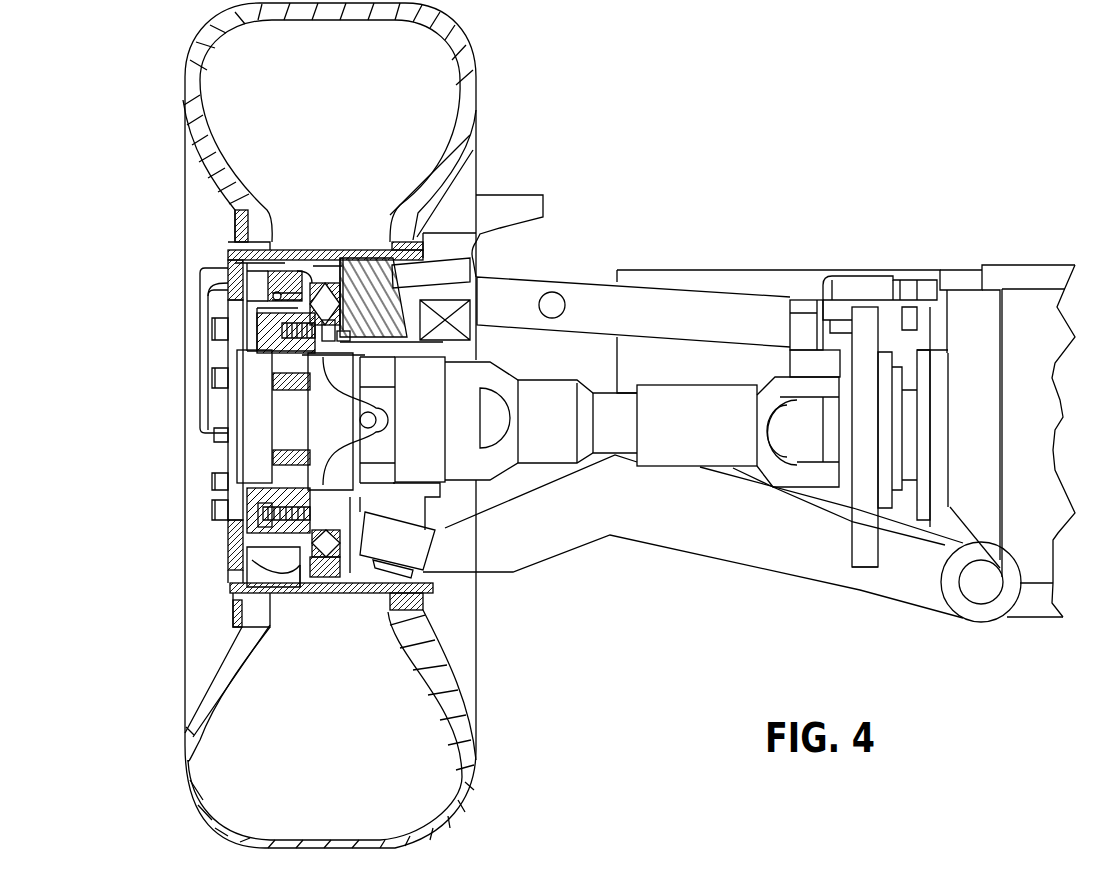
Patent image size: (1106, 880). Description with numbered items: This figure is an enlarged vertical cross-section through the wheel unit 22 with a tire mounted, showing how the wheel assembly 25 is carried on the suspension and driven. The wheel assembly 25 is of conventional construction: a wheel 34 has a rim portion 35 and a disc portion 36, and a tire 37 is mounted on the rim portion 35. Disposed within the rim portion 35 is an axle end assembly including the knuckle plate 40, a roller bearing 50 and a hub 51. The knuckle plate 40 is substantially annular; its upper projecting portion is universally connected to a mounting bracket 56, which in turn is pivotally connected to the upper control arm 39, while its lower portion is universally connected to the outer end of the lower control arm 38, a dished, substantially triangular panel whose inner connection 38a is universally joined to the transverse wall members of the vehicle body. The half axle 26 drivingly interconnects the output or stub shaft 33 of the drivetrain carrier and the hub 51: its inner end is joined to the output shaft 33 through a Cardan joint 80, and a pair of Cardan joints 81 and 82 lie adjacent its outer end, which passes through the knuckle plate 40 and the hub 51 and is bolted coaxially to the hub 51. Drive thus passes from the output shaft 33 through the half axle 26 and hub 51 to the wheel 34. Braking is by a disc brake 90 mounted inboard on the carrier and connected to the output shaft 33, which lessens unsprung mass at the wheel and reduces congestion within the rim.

The wheel unit 22 is at (740, 192).
The wheel assembly 25 is at (218, 570).
The half axle 26 is at (700, 447).
The output shaft 33 is at (895, 428).
The wheel 34 is at (220, 273).
The rim portion 35 is at (333, 250).
The disc portion 36 is at (218, 290).
The tire 37 is at (476, 62).
The lower control arm 38 is at (748, 568).
The pivot bushing 38a is at (972, 590).
The upper control arm 39 is at (557, 278).
The knuckle plate 40 is at (367, 590).
The roller bearing 50 is at (330, 580).
The hub 51 is at (217, 487).
The mounting bracket 56 is at (507, 200).
The Cardan joint 80 is at (807, 483).
The Cardan joint 81 is at (500, 373).
The Cardan joint 82 is at (360, 455).
The disc brake 90 is at (860, 567).